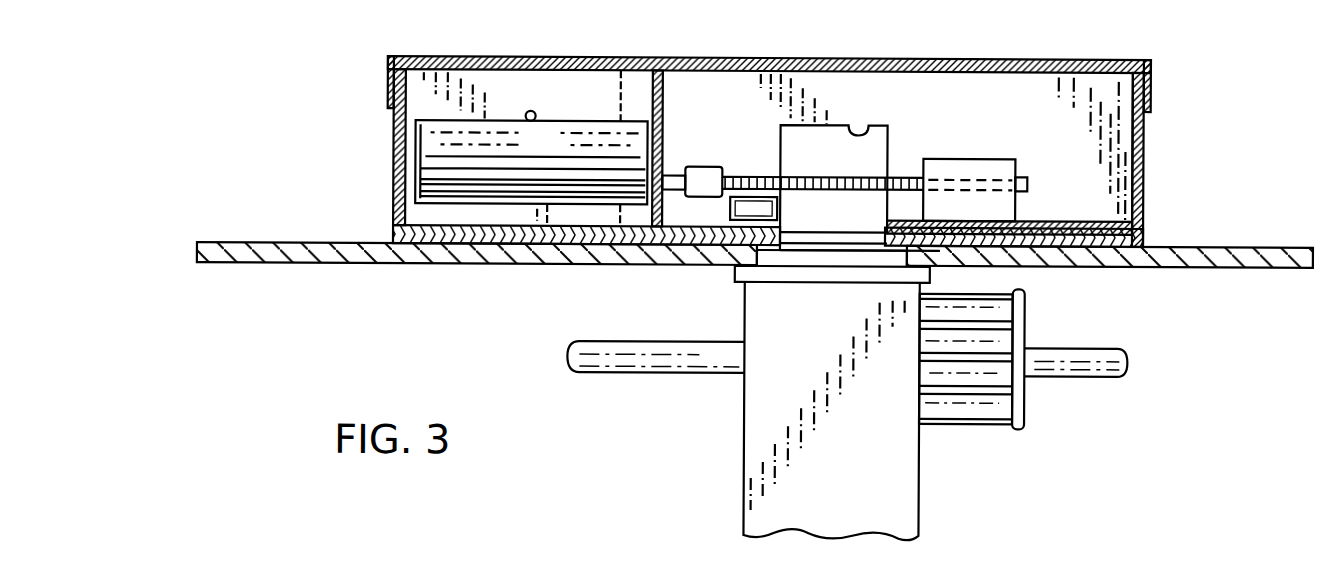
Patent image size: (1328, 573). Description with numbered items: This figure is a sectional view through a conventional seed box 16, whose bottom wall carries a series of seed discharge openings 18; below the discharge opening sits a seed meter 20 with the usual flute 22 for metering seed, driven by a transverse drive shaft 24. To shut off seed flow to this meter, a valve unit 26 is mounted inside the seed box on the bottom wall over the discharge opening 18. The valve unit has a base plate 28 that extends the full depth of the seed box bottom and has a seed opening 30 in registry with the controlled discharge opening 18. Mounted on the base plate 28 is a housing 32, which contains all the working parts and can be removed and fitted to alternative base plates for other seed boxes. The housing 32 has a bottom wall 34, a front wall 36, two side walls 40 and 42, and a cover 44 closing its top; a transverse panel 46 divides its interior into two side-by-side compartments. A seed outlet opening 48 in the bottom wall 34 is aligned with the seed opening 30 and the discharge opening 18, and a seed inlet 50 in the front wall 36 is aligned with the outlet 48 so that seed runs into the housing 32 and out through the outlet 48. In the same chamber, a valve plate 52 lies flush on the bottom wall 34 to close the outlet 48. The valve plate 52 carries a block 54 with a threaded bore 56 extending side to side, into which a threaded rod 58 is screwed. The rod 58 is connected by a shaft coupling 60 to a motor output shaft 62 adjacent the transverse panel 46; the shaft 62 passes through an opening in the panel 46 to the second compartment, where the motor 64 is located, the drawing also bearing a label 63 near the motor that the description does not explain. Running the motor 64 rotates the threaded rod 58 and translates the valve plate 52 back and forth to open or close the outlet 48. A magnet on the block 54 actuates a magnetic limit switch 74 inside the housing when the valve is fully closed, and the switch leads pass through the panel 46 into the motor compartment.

The seed box 16 is at (1236, 247).
The seed discharge opening 18 is at (757, 284).
The seed meter 20 is at (722, 428).
The flute 22 is at (980, 412).
The transverse drive shaft 24 is at (592, 342).
The valve unit 26 is at (739, 56).
The base plate 28 is at (393, 236).
The seed opening 30 is at (840, 241).
The housing 32 is at (1150, 138).
The bottom wall 34 is at (1138, 214).
The front wall 36 is at (976, 90).
The side wall 40 is at (393, 132).
The side wall 42 is at (1143, 176).
The cover 44 is at (889, 58).
The transverse panel 46 is at (666, 93).
The seed outlet opening 48 is at (869, 228).
The seed inlet 50 is at (868, 125).
The valve plate 52 is at (1000, 222).
The block 54 is at (1018, 164).
The threaded bore 56 is at (976, 176).
The threaded rod 58 is at (901, 172).
The shaft coupling 60 is at (707, 176).
The motor output shaft 62 is at (674, 176).
The port 63 is at (533, 125).
The motor 64 is at (578, 121).
The magnetic limit switch 74 is at (733, 208).